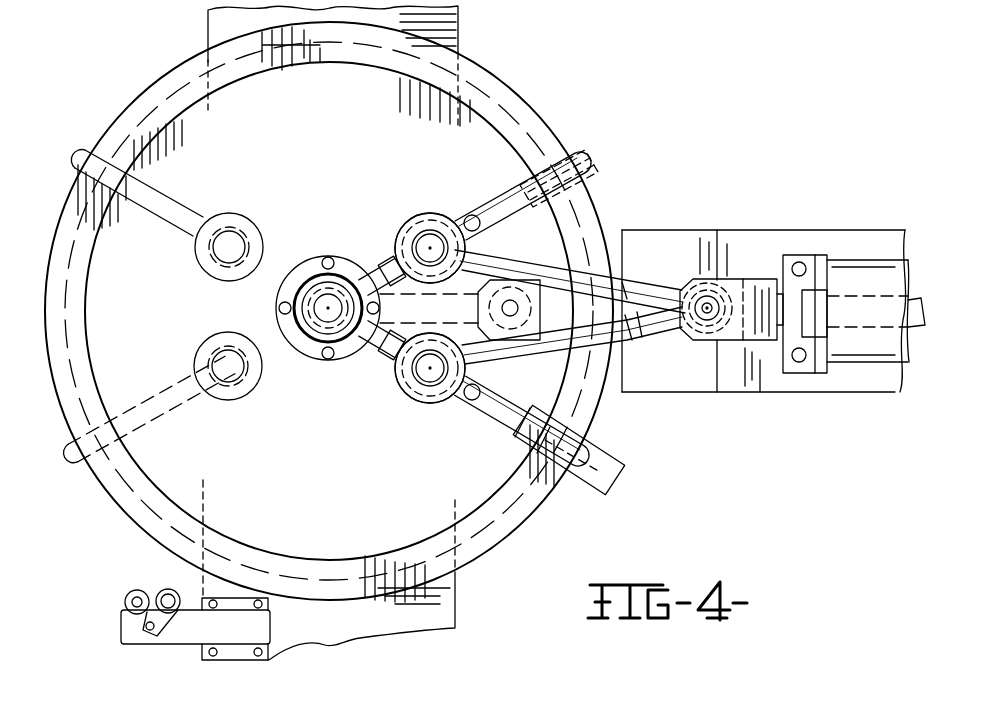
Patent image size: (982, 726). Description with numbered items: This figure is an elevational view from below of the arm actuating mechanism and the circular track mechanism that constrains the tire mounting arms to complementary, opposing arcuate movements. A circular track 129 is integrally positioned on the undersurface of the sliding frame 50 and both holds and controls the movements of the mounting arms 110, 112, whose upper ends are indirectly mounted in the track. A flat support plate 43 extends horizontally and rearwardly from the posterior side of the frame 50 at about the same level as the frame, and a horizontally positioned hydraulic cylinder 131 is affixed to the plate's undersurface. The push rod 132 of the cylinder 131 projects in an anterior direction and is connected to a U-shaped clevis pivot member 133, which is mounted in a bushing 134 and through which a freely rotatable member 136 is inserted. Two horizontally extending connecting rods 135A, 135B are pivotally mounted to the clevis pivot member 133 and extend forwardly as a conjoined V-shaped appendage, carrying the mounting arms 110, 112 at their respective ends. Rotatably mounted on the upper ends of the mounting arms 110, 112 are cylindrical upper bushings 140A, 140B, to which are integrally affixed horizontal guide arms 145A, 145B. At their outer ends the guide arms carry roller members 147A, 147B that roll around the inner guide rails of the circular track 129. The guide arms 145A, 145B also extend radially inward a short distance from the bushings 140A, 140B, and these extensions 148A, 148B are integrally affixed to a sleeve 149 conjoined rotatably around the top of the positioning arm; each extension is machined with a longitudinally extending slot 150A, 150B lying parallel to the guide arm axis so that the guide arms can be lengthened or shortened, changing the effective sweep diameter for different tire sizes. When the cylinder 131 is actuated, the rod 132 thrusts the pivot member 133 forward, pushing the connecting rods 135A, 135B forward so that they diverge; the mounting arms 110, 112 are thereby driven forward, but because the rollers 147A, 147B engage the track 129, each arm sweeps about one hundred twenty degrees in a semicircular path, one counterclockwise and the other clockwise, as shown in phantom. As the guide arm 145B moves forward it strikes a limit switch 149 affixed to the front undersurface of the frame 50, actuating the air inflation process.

The circular track 129 is at (520, 97).
The support plate 43 is at (868, 232).
The sliding frame 50 is at (620, 234).
The sleeve 149 is at (290, 300).
The mounting arm 110 is at (426, 246).
The mounting arm 112 is at (420, 374).
The upper bushing 140A is at (430, 214).
The upper bushing 140B is at (437, 403).
The guide arm extension 148A is at (383, 264).
The guide arm extension 148B is at (373, 352).
The longitudinally extending slot 150A is at (366, 283).
The longitudinally extending slot 150B is at (362, 333).
The connecting rod 135A is at (552, 266).
The connecting rod 135B is at (508, 350).
The guide arm 145A is at (480, 205).
The guide arm 145B is at (487, 430).
The roller member 147A is at (578, 196).
The roller member 147B is at (505, 478).
The clevis pivot member 133 is at (703, 291).
The bushing 134 is at (696, 322).
The freely rotatable member 136 is at (709, 316).
The push rod 132 is at (795, 330).
The hydraulic cylinder 131 is at (862, 368).